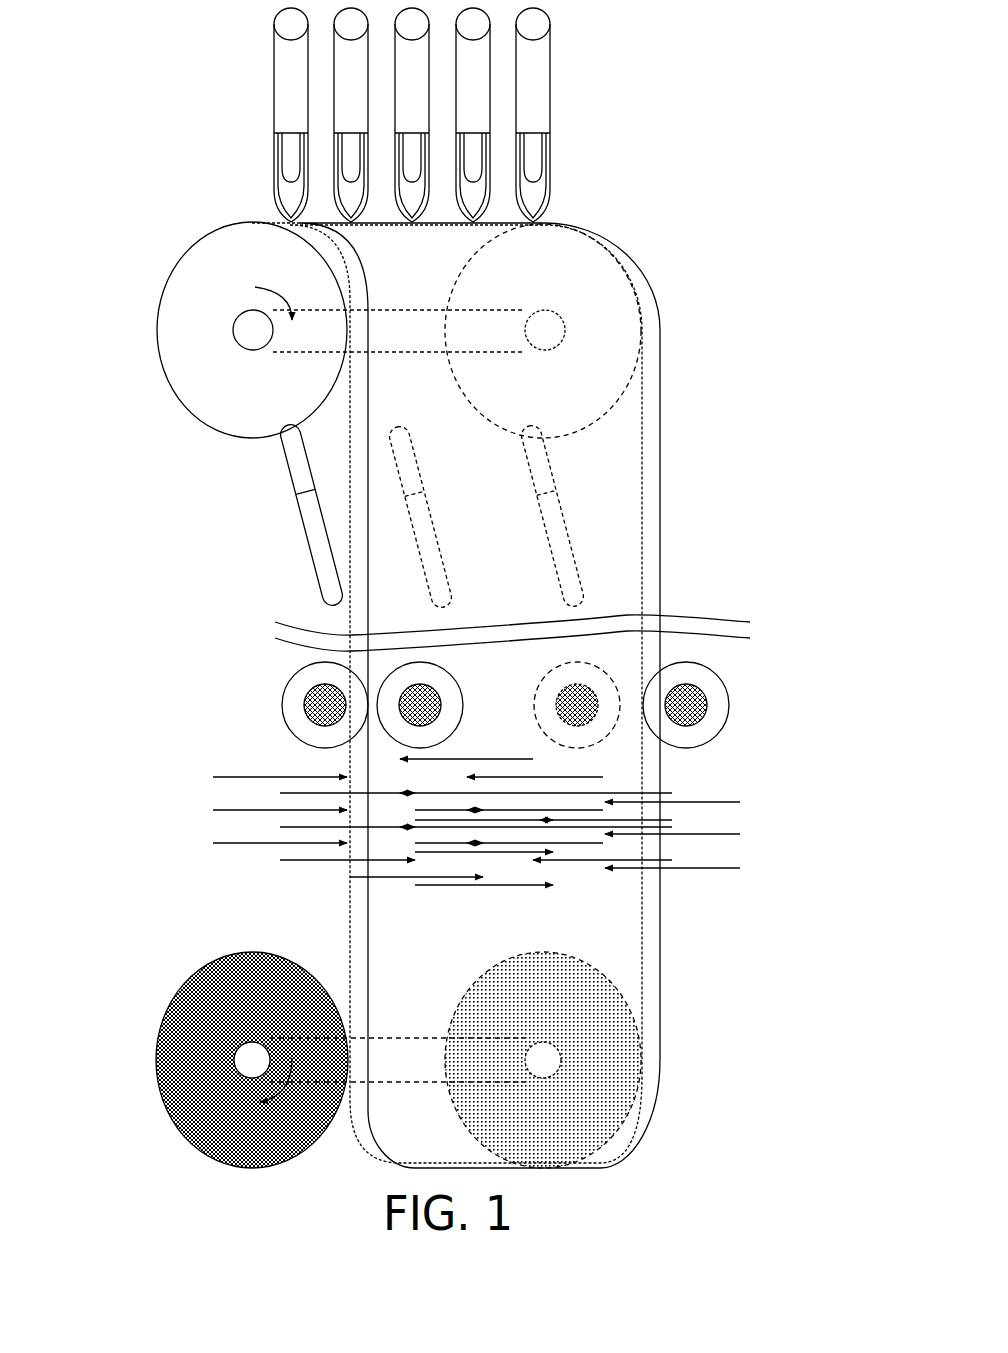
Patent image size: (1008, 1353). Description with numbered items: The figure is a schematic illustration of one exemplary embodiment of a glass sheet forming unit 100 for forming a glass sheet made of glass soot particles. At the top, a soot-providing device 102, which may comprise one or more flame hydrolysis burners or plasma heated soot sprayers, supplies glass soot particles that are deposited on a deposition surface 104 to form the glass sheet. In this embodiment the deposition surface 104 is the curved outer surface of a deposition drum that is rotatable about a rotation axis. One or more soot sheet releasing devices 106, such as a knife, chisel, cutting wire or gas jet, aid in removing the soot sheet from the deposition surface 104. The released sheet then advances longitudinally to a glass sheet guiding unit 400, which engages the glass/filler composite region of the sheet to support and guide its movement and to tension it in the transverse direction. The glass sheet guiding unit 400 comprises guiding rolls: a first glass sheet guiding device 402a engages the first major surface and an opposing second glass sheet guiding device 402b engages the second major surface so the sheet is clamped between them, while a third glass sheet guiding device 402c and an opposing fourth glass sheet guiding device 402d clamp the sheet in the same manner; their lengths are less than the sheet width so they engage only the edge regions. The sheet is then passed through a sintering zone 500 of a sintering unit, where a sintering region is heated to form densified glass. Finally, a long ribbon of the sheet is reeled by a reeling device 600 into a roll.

The glass sheet forming unit 100 is at (705, 140).
The soot-providing device 102 is at (537, 72).
The deposition surface 104 is at (180, 260).
The soot sheet releasing device 106 is at (305, 543).
The glass sheet guiding unit 400 is at (479, 701).
The first glass sheet guiding device 402a is at (410, 677).
The second glass sheet guiding device 402b is at (293, 710).
The third glass sheet guiding device 402c is at (715, 702).
The fourth glass sheet guiding device 402d is at (587, 678).
The sintering zone 500 is at (758, 784).
The reeling device 600 is at (183, 936).